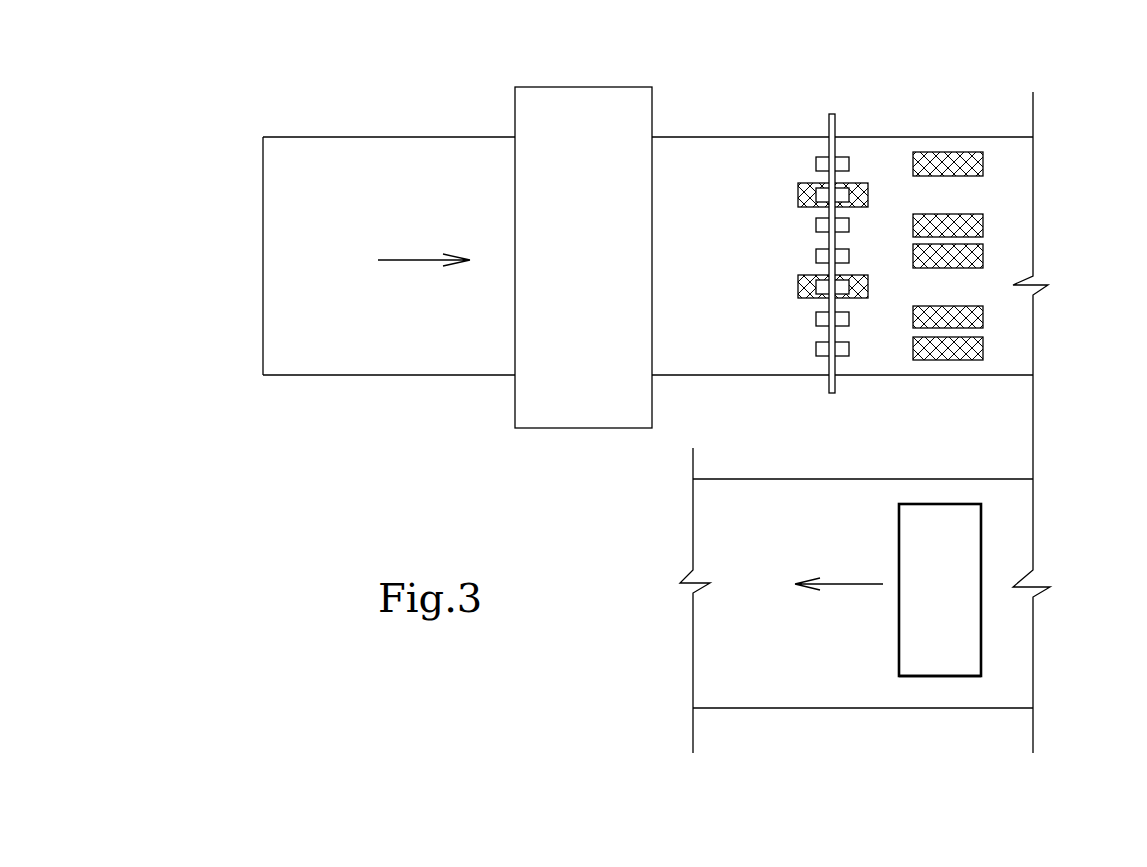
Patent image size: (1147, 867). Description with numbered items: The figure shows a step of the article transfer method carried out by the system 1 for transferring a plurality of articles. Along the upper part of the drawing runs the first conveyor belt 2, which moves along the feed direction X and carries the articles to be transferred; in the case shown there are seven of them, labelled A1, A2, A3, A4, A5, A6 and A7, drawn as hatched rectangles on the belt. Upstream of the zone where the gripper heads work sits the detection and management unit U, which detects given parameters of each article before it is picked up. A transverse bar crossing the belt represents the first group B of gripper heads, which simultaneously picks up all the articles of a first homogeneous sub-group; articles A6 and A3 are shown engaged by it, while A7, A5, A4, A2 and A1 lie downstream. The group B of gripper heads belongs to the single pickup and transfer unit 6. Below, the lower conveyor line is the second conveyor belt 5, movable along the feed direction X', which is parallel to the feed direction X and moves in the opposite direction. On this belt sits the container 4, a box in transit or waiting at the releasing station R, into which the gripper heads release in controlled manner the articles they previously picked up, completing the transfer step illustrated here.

The system for transferring a plurality of articles 1 is at (237, 137).
The first conveyor belt 2 is at (676, 267).
The detection and management unit U is at (571, 268).
The feed direction X is at (424, 209).
The first group of gripper heads B is at (832, 112).
The pickup and transfer unit 6 is at (829, 366).
The article A6 is at (798, 195).
The article A3 is at (798, 288).
The article A7 is at (983, 164).
The article A5 is at (983, 223).
The article A4 is at (983, 252).
The article A2 is at (983, 316).
The article A1 is at (983, 349).
The second conveyor belt 5 is at (790, 643).
The feed direction X' is at (839, 546).
The container 4 is at (981, 517).
The releasing station R is at (908, 681).